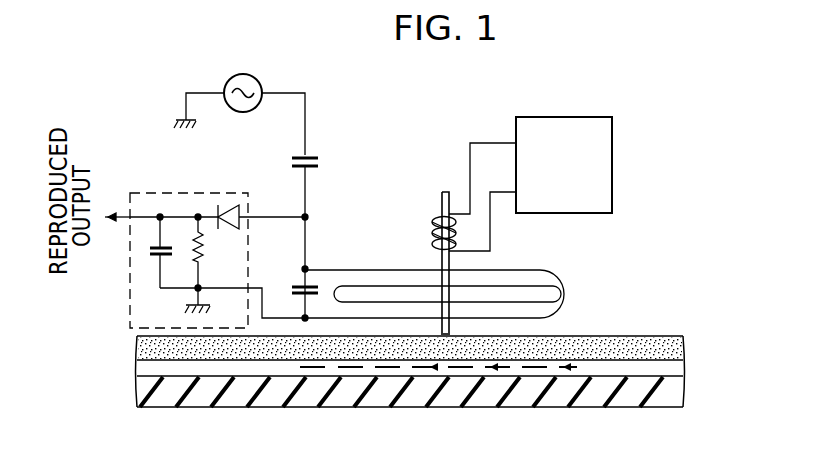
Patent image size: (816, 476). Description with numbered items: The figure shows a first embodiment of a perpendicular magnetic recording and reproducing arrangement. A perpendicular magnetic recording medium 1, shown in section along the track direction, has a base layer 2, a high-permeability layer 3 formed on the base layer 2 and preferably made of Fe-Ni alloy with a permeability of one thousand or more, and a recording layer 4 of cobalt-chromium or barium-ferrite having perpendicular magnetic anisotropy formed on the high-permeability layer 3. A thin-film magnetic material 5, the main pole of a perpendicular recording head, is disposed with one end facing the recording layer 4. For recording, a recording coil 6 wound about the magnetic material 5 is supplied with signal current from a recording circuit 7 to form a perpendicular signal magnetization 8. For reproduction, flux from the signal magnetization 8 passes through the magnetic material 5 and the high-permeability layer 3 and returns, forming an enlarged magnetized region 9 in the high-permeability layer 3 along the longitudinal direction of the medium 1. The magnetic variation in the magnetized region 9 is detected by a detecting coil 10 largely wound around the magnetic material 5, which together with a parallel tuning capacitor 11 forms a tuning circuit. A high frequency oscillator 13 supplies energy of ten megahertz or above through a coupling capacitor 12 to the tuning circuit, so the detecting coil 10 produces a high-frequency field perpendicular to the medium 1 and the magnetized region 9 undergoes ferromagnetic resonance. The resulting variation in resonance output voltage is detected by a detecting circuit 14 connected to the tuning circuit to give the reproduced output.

The perpendicular magnetic recording medium 1 is at (688, 366).
The base layer 2 is at (625, 397).
The high-permeability layer 3 is at (662, 371).
The recording layer 4 is at (637, 348).
The thin-film magnetic material 5 is at (445, 190).
The recording coil 6 is at (432, 222).
The recording circuit 7 is at (612, 168).
The perpendicular signal magnetization 8 is at (447, 346).
The enlarged magnetized region 9 is at (530, 367).
The detecting coil 10 is at (553, 272).
The tuning capacitor 11 is at (298, 286).
The coupling capacitor 12 is at (318, 162).
The high frequency oscillator 13 is at (256, 81).
The detecting circuit 14 is at (128, 293).